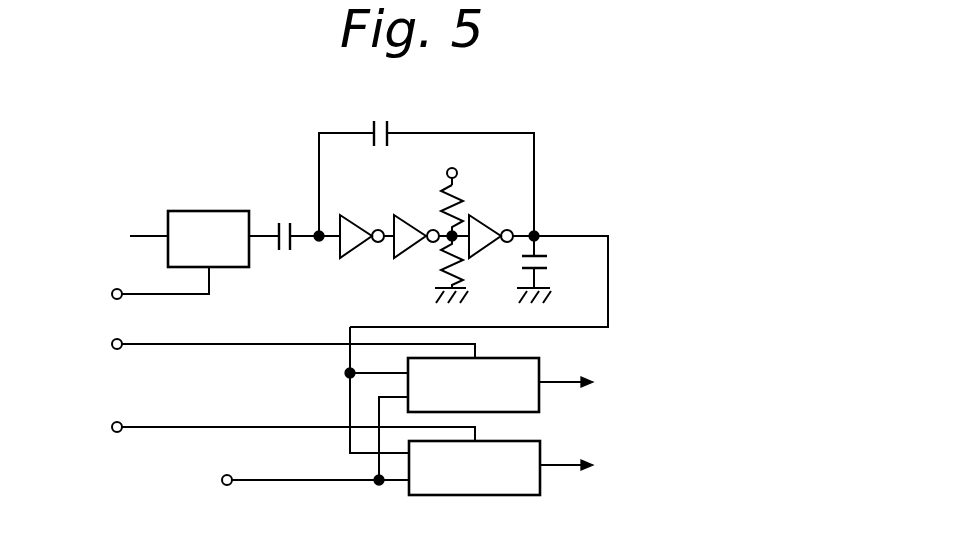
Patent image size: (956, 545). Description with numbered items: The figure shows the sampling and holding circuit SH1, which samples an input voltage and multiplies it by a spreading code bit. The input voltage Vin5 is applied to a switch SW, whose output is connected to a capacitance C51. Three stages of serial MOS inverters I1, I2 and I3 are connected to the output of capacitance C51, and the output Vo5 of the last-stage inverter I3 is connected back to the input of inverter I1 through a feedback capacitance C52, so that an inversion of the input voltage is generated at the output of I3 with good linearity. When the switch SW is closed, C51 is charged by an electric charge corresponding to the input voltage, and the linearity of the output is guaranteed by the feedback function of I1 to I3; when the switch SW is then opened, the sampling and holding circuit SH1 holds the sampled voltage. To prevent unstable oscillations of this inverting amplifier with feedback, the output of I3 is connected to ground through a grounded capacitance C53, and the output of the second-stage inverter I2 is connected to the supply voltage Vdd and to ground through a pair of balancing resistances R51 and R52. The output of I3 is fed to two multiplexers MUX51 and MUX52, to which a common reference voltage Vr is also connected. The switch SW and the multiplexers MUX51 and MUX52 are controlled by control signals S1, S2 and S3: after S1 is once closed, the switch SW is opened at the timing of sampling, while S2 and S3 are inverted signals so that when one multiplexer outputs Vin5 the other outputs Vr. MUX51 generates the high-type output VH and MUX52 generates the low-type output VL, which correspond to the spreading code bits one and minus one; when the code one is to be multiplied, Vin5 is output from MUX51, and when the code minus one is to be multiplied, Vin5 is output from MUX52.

The sampling and holding circuit SH1 is at (590, 158).
The switch SW is at (208, 239).
The capacitance C51 is at (282, 222).
The feedback capacitance C52 is at (426, 165).
The grounded capacitance C53 is at (554, 269).
The balancing resistance R51 is at (443, 191).
The balancing resistance R52 is at (438, 267).
The MOS inverter I1 is at (362, 224).
The MOS inverter I2 is at (416, 224).
The MOS inverter I3 is at (491, 224).
The multiplexer MUX51 is at (442, 390).
The multiplexer MUX52 is at (474, 468).
The input voltage Vin5 is at (122, 237).
The control signal S1 is at (143, 286).
The control signal S2 is at (276, 345).
The control signal S3 is at (276, 428).
The common reference voltage Vr is at (300, 444).
The supply voltage Vdd is at (474, 173).
The output of MOS inverter I3 Vo5 is at (586, 215).
The high type output VH is at (584, 383).
The low type output VL is at (583, 466).